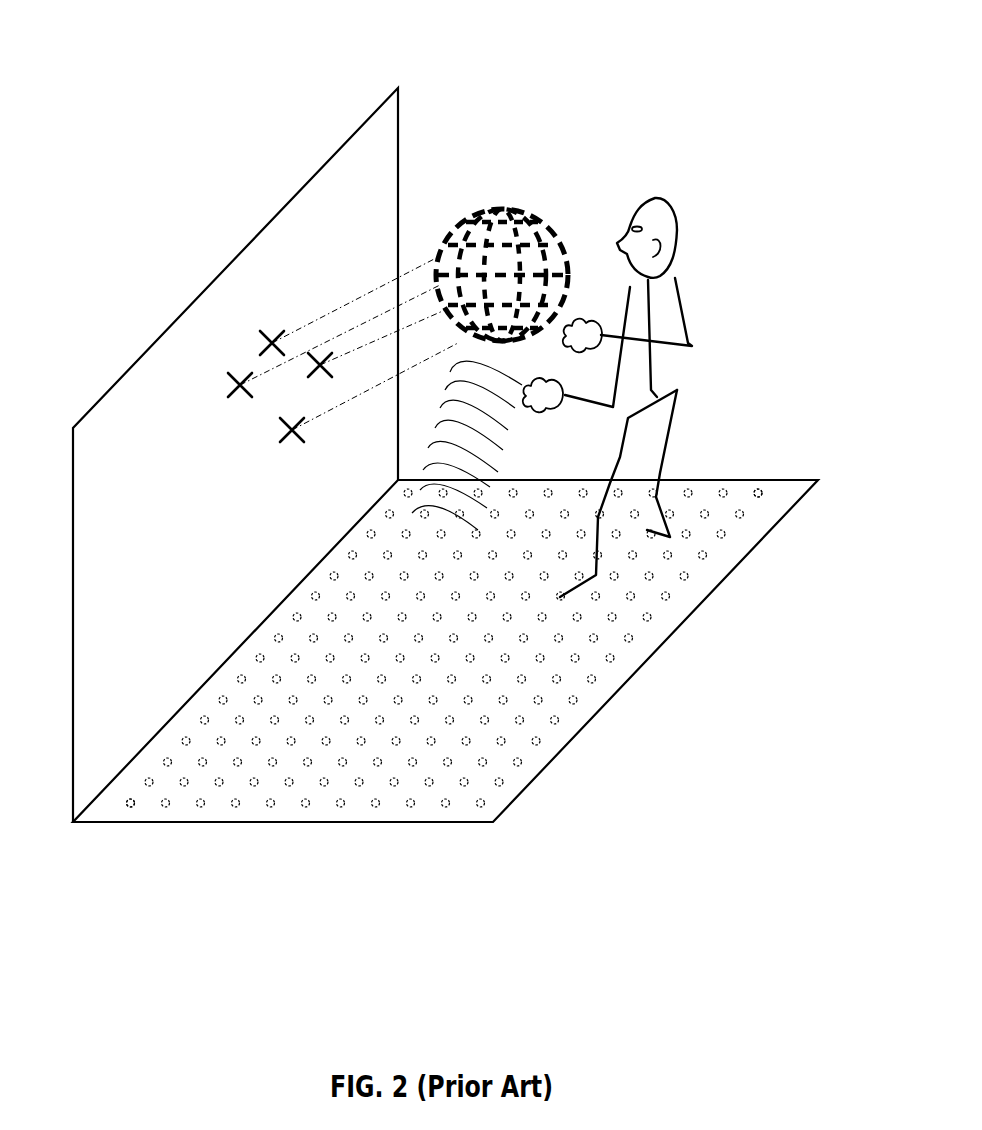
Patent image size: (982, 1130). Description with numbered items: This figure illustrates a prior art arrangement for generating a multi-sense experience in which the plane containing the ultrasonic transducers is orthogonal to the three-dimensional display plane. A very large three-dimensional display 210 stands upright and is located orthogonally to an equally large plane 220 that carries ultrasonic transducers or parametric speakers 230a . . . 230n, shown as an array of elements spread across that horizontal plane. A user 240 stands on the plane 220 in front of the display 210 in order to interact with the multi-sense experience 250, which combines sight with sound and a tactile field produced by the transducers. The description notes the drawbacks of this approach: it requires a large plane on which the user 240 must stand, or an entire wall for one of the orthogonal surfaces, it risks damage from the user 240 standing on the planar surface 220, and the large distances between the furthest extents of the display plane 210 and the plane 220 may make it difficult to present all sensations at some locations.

The 3-D display 210 is at (392, 133).
The plane 220 is at (702, 607).
The ultrasonic transducer or parametric speaker 230a is at (125, 808).
The ultrasonic transducer or parametric speaker 230n is at (763, 493).
The user 240 is at (690, 308).
The multi-sense experience 250 is at (533, 207).